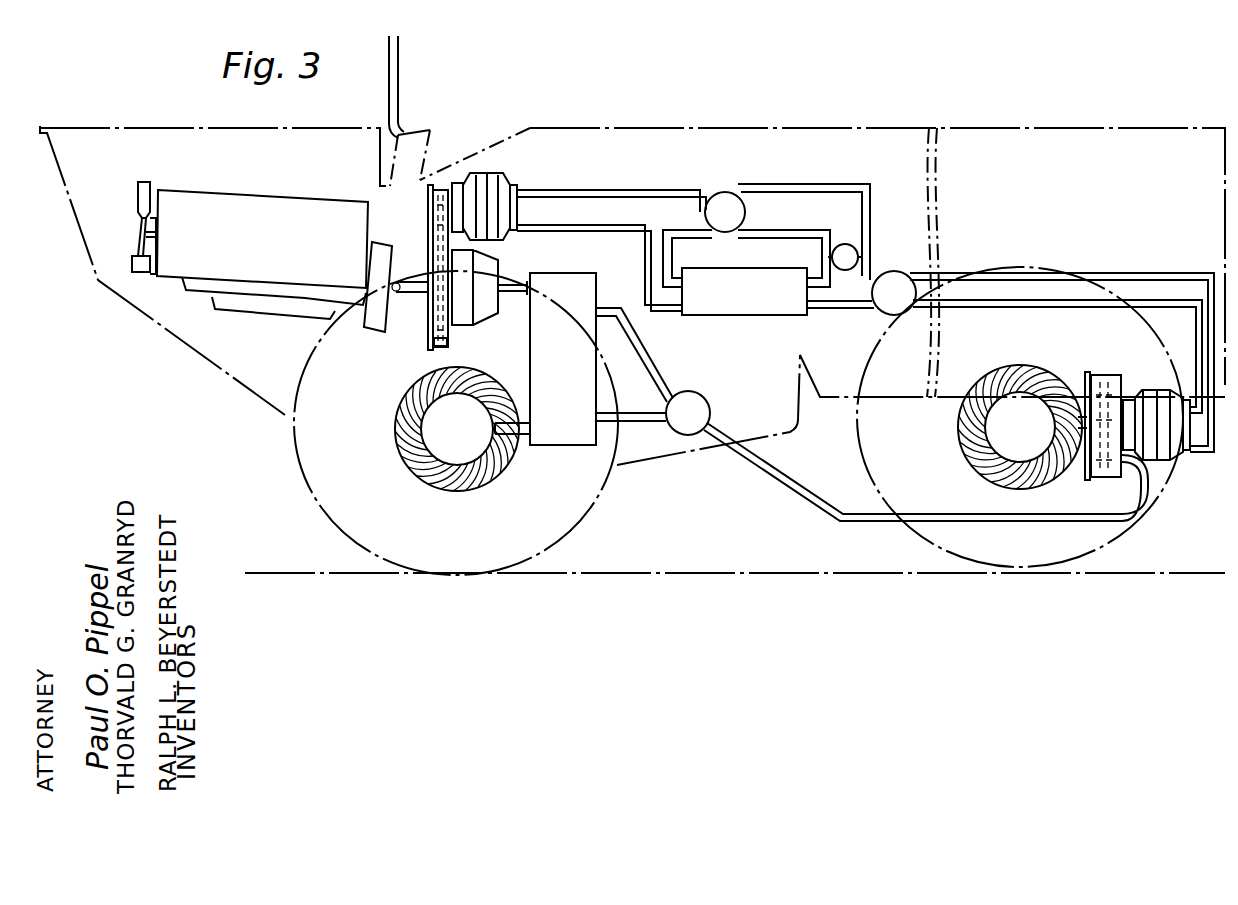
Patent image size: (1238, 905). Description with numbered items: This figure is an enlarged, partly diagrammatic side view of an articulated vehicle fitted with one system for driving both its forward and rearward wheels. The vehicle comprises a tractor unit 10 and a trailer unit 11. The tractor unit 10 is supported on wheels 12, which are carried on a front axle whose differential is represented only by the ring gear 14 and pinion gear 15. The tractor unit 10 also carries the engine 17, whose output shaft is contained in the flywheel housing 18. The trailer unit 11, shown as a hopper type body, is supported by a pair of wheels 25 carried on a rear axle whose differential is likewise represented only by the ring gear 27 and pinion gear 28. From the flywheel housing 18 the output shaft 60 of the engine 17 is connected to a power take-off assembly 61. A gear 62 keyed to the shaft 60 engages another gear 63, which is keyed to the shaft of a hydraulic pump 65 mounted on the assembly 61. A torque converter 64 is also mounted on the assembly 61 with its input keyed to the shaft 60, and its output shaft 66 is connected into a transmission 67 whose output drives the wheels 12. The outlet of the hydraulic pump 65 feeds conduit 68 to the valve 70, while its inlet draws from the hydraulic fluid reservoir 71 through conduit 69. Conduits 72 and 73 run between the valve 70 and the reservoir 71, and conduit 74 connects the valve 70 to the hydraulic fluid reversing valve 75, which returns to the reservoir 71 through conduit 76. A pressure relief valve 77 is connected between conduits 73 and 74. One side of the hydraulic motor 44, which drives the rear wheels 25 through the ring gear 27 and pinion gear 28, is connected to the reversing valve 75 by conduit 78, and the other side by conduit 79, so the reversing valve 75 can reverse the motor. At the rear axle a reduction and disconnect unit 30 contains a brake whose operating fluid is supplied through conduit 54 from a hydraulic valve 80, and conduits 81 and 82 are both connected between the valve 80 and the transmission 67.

The tractor unit 10 is at (339, 148).
The trailer unit 11 is at (1013, 126).
The wheels 12 is at (294, 452).
The ring gear 14 is at (477, 491).
The pinion gear 15 is at (521, 450).
The engine 17 is at (258, 242).
The flywheel housing 18 is at (383, 248).
The wheels 25 is at (900, 535).
The ring gear 27 is at (966, 458).
The pinion gear 28 is at (1053, 434).
The reduction and disconnect unit 30 is at (1105, 370).
The hydraulic motor 44 is at (1151, 390).
The hydraulic fluid conduit 54 is at (1031, 523).
The output shaft 60 is at (413, 294).
The power take-off assembly 61 is at (426, 345).
The gear 62 is at (449, 333).
The gear 63 is at (428, 217).
The torque converter 64 is at (483, 298).
The hydraulic pump 65 is at (495, 172).
The output shaft 66 is at (512, 288).
The transmission 67 is at (580, 366).
The hydraulic fluid conduit 68 is at (597, 190).
The hydraulic fluid conduit 69 is at (579, 228).
The valve 70 is at (727, 192).
The hydraulic fluid reservoir 71 is at (757, 301).
The hydraulic fluid conduit 72 is at (673, 257).
The hydraulic fluid conduit 73 is at (806, 246).
The hydraulic fluid conduit 74 is at (787, 185).
The hydraulic fluid reversing valve 75 is at (893, 271).
The conduit 76 is at (831, 312).
The pressure relief valve 77 is at (845, 244).
The hydraulic fluid conduit 78 is at (1112, 273).
The conduit 79 is at (1058, 308).
The hydraulic valve 80 is at (705, 398).
The hydraulic conduit 81 is at (659, 378).
The hydraulic conduit 82 is at (633, 411).